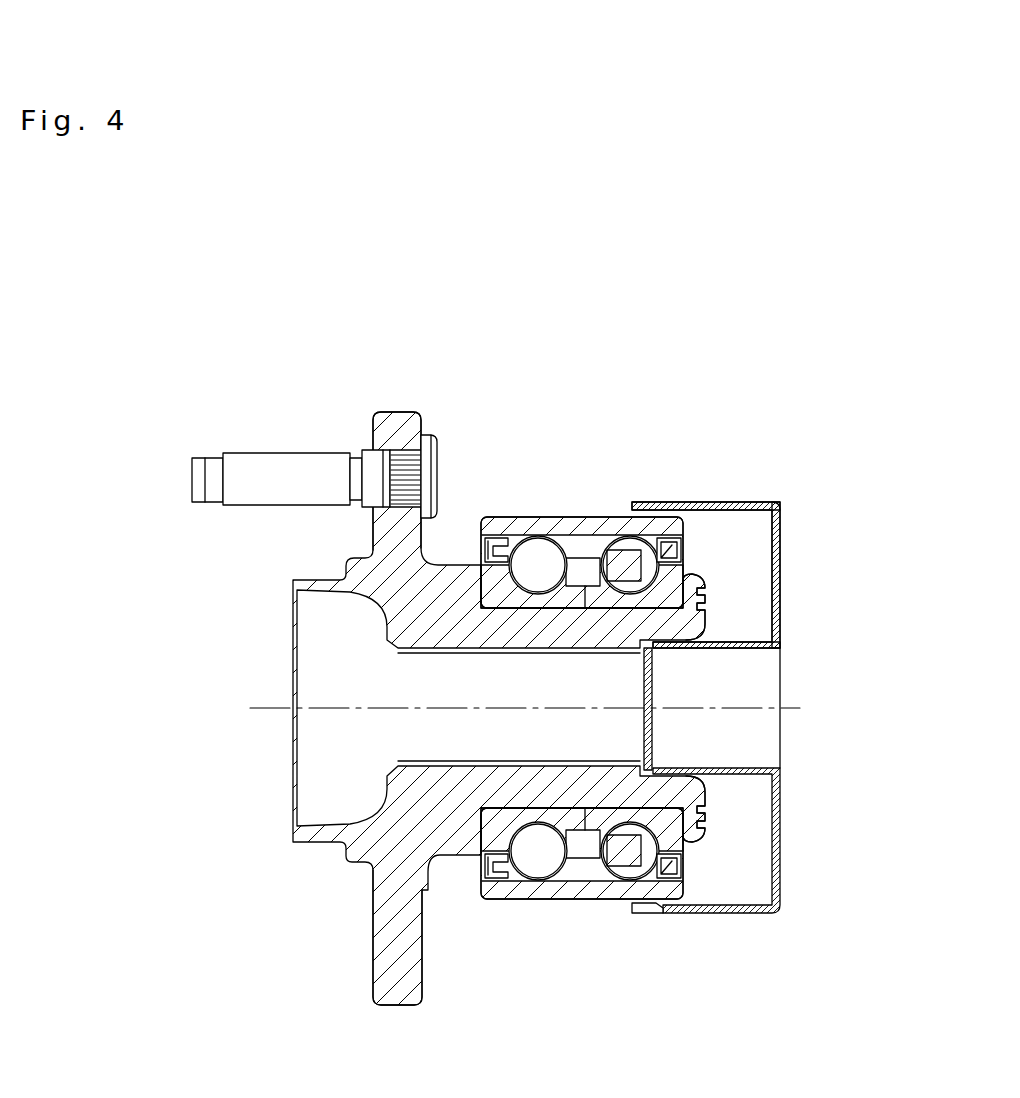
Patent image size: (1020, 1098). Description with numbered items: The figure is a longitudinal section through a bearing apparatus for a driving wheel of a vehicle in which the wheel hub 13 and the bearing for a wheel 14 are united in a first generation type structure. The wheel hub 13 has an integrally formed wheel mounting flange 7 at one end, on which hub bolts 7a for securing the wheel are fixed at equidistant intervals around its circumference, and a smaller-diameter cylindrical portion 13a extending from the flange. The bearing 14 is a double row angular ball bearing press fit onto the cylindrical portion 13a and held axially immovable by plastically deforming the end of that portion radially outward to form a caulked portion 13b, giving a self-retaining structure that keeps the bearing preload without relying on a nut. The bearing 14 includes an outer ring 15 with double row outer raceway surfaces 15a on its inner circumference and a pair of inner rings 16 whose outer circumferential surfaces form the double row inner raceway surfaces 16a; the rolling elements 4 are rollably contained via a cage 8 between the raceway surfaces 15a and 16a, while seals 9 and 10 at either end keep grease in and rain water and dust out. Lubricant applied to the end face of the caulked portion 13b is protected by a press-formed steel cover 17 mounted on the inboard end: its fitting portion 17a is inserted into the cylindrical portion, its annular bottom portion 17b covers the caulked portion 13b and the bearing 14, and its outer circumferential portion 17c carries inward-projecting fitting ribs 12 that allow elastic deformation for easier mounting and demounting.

The rolling elements 4 is at (630, 873).
The wheel mounting flange 7 is at (397, 430).
The hub bolts 7a is at (323, 477).
The cage 8 is at (600, 590).
The seal 9 is at (482, 870).
The seal 10 is at (683, 867).
The fitting ribs 12 is at (633, 907).
The wheel hub 13 is at (380, 580).
The cylindrical portion 13a is at (487, 612).
The caulked portion 13b is at (703, 785).
The bearing for a wheel 14 is at (611, 502).
The outer ring 15 is at (579, 525).
The outer raceway surfaces 15a is at (528, 525).
The inner rings 16 is at (520, 595).
The inner raceway surfaces 16a is at (540, 585).
The cover 17 is at (877, 623).
The fitting portion 17a is at (728, 648).
The annular bottom portion 17b is at (780, 590).
The outer circumferential portion 17c is at (724, 500).